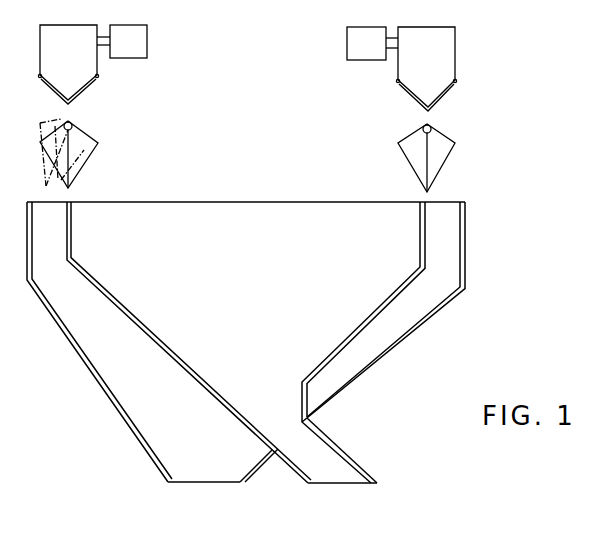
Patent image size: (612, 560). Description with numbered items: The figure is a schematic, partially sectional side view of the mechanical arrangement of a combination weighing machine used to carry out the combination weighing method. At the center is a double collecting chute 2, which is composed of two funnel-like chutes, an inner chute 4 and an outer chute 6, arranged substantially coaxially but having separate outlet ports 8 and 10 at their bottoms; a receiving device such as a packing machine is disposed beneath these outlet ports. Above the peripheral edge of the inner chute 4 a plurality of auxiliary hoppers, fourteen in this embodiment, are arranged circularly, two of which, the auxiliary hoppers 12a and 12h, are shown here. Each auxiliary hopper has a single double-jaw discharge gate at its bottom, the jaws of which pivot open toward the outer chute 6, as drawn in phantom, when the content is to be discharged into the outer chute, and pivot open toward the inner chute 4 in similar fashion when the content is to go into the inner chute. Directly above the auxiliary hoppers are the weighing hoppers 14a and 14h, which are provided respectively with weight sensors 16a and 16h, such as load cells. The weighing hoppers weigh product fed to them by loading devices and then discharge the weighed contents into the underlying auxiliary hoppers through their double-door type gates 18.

The double collecting chute 2 is at (241, 202).
The inner chute 4 is at (326, 201).
The outer chute 6 is at (42, 200).
The outlet port 8 is at (333, 485).
The outlet port 10 is at (207, 484).
The auxiliary hopper 12a is at (98, 144).
The auxiliary hopper 12h is at (398, 149).
The weighing hopper 14a is at (70, 31).
The weighing hopper 14h is at (420, 33).
The weight sensor 16a is at (131, 33).
The weight sensor 16h is at (355, 30).
The double-door type gate 18 is at (48, 88).